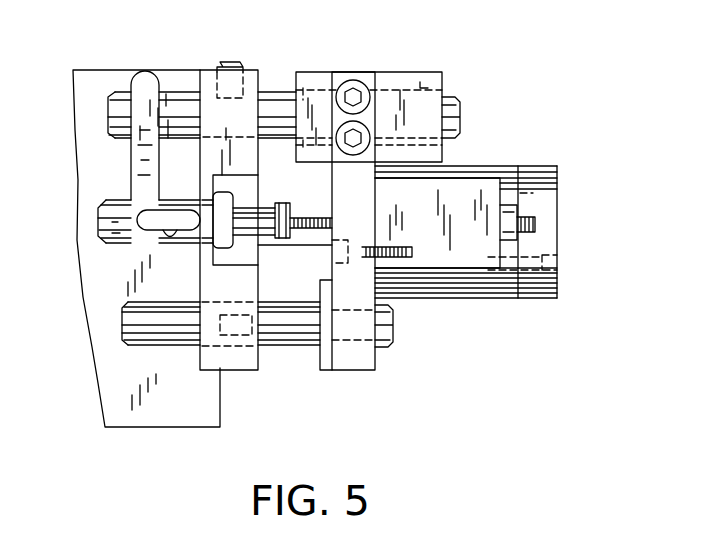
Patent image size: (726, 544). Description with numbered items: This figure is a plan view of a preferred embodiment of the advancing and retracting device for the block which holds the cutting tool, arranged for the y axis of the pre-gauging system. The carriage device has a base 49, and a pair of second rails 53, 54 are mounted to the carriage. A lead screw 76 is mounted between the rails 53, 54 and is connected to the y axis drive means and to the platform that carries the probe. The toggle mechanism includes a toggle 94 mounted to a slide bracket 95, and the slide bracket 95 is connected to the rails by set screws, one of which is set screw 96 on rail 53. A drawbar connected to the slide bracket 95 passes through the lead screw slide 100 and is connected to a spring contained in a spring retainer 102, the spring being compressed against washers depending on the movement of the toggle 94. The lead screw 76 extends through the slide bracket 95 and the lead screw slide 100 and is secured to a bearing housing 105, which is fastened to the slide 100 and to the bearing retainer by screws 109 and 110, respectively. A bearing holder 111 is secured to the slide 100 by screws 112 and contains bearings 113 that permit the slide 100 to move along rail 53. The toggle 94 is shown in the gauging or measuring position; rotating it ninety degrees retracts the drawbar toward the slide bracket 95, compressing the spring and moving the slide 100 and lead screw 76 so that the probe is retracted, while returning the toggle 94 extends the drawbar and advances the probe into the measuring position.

The base 49 is at (160, 413).
The second rail 53 is at (178, 98).
The second rail 54 is at (148, 340).
The lead screw 76 is at (117, 244).
The toggle 94 is at (138, 153).
The slide bracket 95 is at (243, 370).
The set screw 96 is at (233, 67).
The lead screw slide 100 is at (362, 370).
The spring retainer 102 is at (505, 181).
The bearing housing 105 is at (500, 187).
The screw 109 is at (412, 258).
The screw 110 is at (557, 262).
The bearing holder 111 is at (387, 72).
The screws 112 is at (350, 81).
The bearings 113 is at (423, 72).